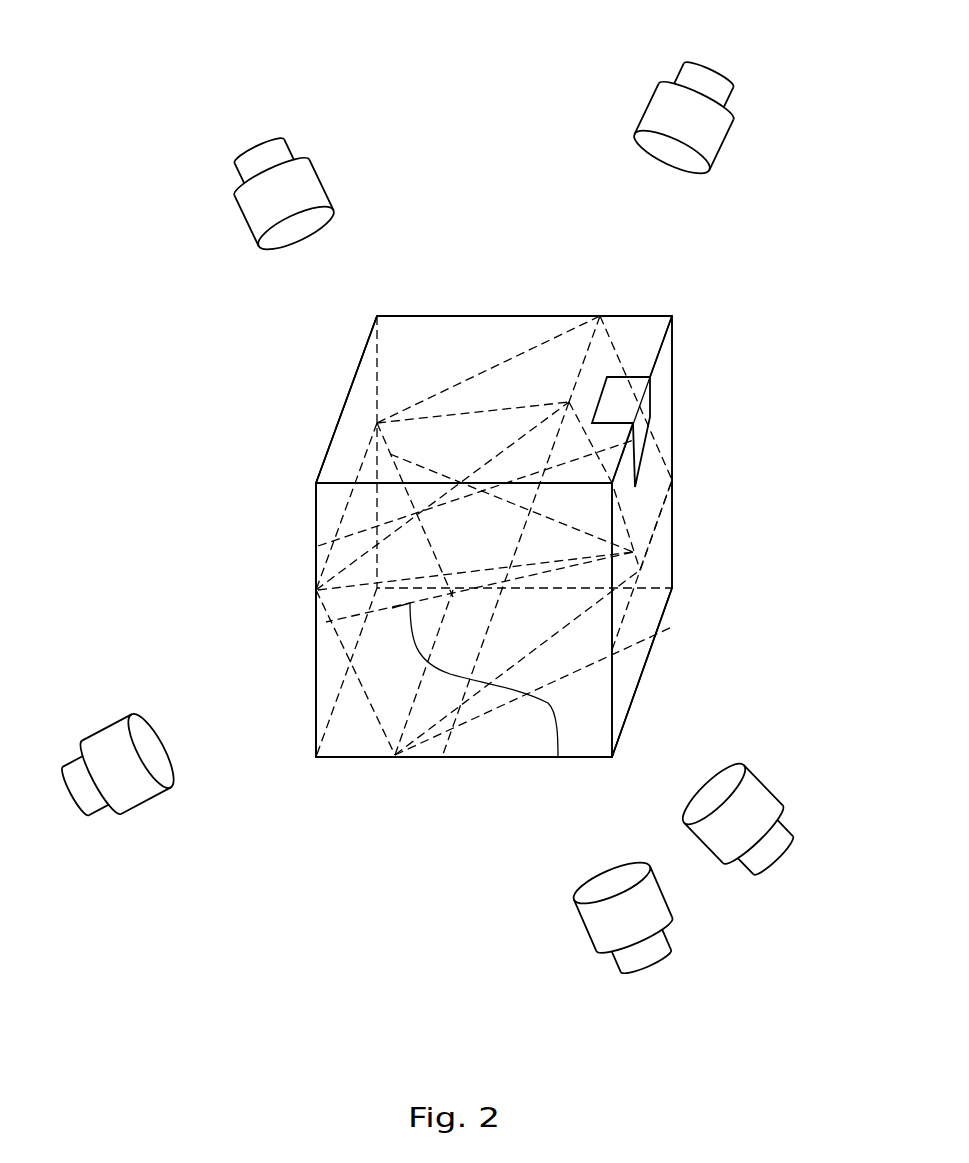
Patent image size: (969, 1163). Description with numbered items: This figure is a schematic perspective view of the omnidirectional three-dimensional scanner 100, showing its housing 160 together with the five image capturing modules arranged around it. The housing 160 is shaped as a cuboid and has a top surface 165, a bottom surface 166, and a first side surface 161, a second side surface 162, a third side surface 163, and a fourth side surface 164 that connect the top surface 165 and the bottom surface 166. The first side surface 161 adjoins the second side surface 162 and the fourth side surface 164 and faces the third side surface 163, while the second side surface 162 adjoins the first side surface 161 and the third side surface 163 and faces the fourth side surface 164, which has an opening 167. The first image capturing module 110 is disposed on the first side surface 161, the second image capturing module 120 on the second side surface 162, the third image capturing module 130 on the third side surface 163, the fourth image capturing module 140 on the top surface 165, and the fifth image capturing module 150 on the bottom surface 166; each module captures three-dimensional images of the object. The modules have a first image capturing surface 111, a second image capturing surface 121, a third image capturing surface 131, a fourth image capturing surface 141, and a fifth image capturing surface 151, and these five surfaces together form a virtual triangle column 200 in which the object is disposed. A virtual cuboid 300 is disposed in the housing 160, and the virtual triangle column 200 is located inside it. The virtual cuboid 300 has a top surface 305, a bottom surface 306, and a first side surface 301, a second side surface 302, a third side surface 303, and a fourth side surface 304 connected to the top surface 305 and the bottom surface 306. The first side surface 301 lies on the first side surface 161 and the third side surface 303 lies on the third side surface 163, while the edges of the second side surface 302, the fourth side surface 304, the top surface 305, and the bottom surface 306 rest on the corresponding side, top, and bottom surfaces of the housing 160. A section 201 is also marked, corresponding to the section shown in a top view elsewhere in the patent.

The omnidirectional three-dimensional scanner 100 is at (82, 34).
The first image capturing module 110 is at (655, 115).
The first image capturing surface 111 is at (485, 420).
The second image capturing module 120 is at (138, 795).
The second image capturing surface 121 is at (378, 685).
The third image capturing module 130 is at (762, 868).
The third image capturing surface 131 is at (443, 755).
The fourth image capturing module 140 is at (252, 220).
The fourth image capturing surface 141 is at (362, 468).
The fifth image capturing module 150 is at (603, 930).
The fifth image capturing surface 151 is at (548, 625).
The housing 160 is at (355, 385).
The first side surface 161 is at (515, 332).
The second side surface 162 is at (355, 420).
The third side surface 163 is at (330, 758).
The fourth side surface 164 is at (672, 575).
The top surface 165 is at (410, 342).
The bottom surface 166 is at (486, 760).
The opening 167 is at (650, 417).
The virtual triangle column 200 is at (347, 500).
The section 201 is at (558, 757).
The virtual cuboid 300 is at (332, 545).
The first side surface 301 is at (612, 650).
The second side surface 302 is at (330, 613).
The third side surface 303 is at (378, 760).
The fourth side surface 304 is at (390, 454).
The top surface 305 is at (570, 347).
The bottom surface 306 is at (557, 667).